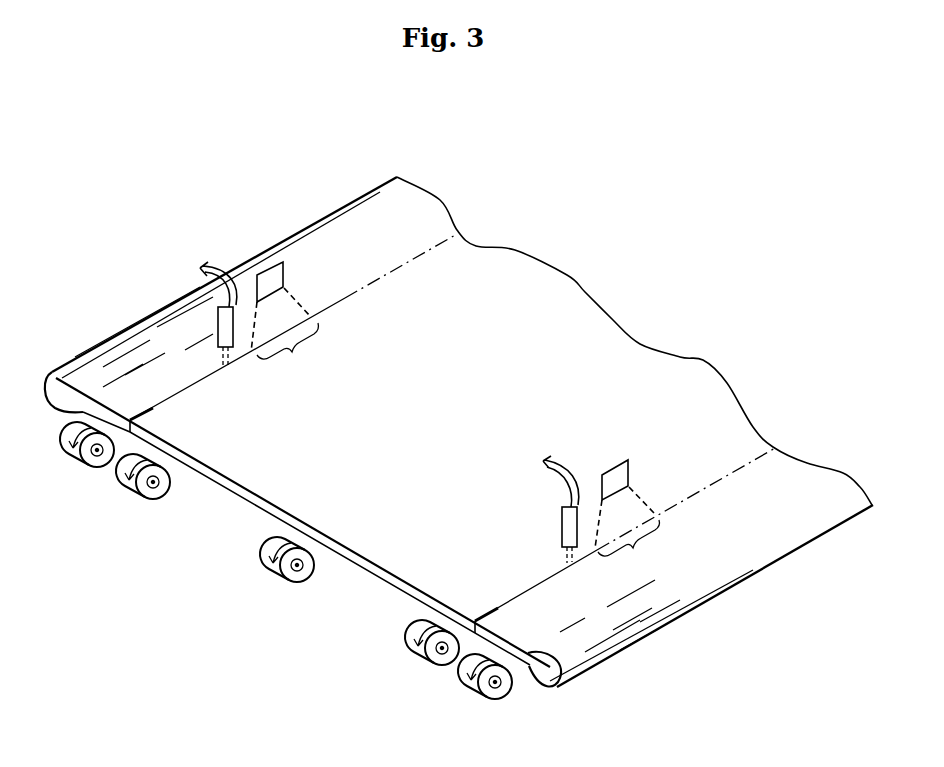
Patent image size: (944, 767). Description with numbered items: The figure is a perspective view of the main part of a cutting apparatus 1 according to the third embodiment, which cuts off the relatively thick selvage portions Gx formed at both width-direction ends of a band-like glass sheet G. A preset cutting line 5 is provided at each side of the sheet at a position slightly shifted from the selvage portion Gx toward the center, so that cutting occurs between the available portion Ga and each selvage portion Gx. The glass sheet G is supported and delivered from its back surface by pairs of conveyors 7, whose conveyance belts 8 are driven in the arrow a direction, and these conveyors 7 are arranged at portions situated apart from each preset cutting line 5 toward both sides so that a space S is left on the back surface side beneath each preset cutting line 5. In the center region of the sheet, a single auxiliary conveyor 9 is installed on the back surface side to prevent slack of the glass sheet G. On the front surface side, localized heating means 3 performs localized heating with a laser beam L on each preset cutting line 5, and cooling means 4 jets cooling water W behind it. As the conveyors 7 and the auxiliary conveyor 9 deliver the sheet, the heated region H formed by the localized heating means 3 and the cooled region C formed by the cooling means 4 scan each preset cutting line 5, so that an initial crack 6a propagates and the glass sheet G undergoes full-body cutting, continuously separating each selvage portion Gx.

The cutting apparatus 1 is at (602, 199).
The localized heating means 3 is at (285, 253).
The cooling means 4 is at (233, 306).
The preset cutting line 5 is at (417, 246).
The initial crack 6a is at (150, 414).
The conveyor 7 is at (111, 450).
The conveyance belt 8 is at (73, 421).
The auxiliary conveyor 9 is at (319, 567).
The band-like glass sheet G is at (545, 323).
The available portion Ga is at (583, 350).
The selvage portion Gx is at (117, 343).
The cooling water W is at (222, 365).
The cooled region C is at (226, 371).
The laser beam L is at (298, 294).
The heated region H is at (458, 444).
The space S is at (113, 477).
The arrow direction a is at (290, 542).